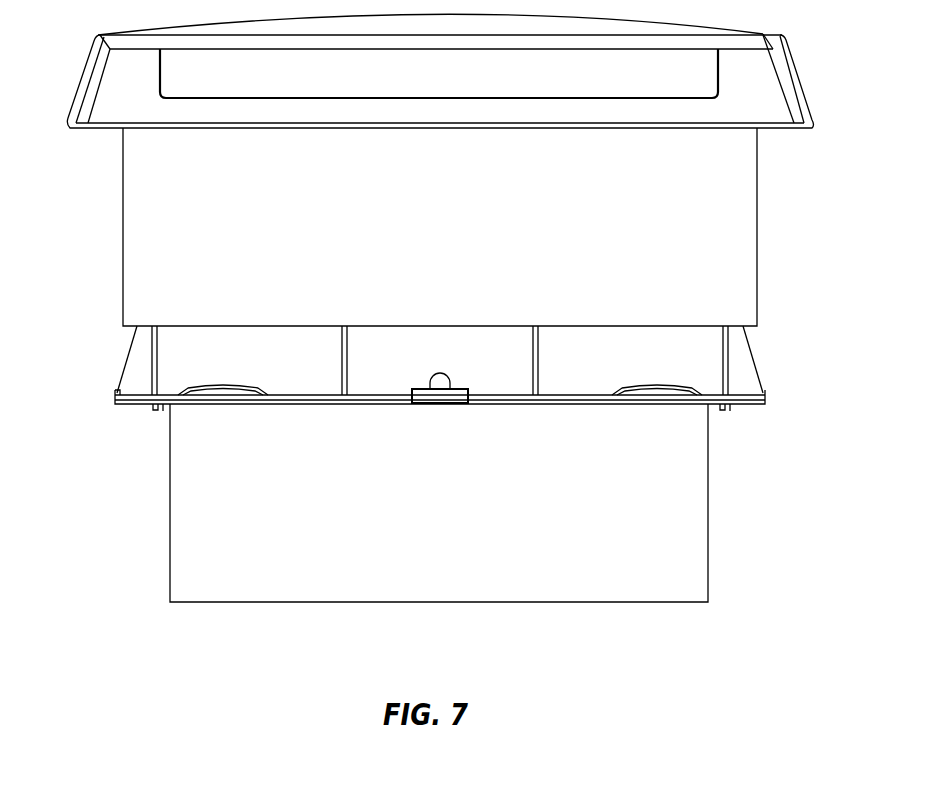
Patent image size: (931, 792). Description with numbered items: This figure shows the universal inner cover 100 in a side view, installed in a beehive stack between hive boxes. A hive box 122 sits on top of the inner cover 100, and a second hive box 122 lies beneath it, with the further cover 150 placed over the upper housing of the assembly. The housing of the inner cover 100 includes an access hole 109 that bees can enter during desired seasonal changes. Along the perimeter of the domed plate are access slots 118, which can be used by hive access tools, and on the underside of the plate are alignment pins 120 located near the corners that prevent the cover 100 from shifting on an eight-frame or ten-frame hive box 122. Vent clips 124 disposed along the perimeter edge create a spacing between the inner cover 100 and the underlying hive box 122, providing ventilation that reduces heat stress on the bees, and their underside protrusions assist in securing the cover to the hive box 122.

The universal inner cover 100 is at (702, 363).
The access hole 109 is at (440, 372).
The access slot 118 is at (222, 395).
The alignment pin 120 is at (203, 400).
The hive box 122 is at (707, 253).
The vent clip 124 is at (115, 400).
The cover 150 is at (752, 85).